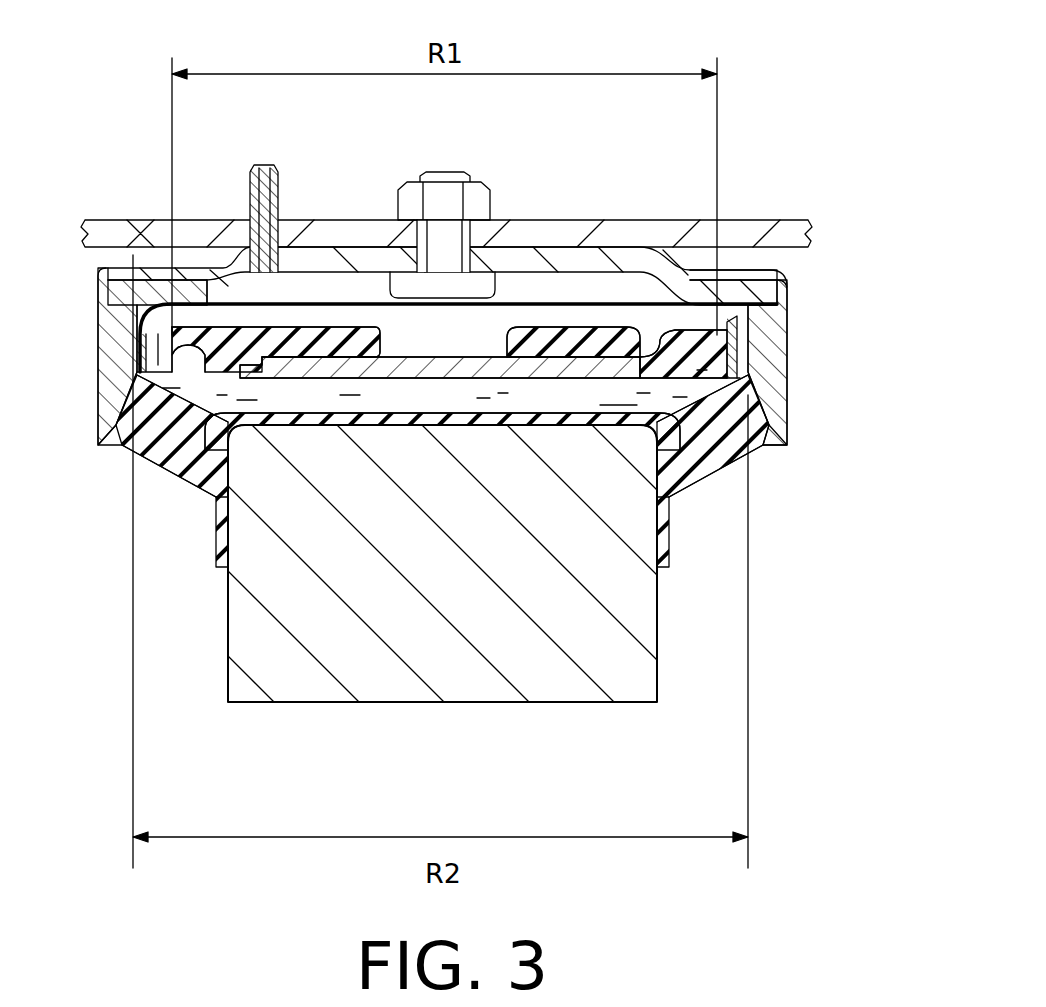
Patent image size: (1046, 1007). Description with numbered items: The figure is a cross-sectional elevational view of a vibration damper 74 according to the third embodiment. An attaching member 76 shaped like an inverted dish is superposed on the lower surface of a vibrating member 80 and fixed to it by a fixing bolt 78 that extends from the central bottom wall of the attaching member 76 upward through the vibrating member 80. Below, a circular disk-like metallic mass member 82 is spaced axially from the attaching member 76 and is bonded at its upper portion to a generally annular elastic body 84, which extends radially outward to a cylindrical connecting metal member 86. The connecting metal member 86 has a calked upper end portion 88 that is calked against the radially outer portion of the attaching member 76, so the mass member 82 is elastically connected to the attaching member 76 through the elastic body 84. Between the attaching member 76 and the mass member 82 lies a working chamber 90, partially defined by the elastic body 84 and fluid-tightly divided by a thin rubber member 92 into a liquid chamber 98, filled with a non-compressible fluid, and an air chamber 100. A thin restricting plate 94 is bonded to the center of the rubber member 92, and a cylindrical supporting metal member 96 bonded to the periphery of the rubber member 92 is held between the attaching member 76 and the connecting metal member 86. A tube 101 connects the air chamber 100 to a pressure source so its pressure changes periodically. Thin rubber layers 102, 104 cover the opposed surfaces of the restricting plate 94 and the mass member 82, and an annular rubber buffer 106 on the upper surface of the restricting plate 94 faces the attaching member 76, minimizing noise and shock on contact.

The vibration damper 74 is at (473, 411).
The attaching member 76 is at (562, 258).
The fixing bolt 78 is at (443, 232).
The vibrating member 80 is at (116, 216).
The mass member 82 is at (550, 680).
The elastic body 84 is at (697, 447).
The connecting metal member 86 is at (106, 346).
The calked upper end portion 88 is at (750, 250).
The working chamber 90 is at (503, 218).
The rubber member 92 is at (207, 363).
The restricting plate 94 is at (403, 362).
The supporting metal member 96 is at (735, 362).
The liquid chamber 98 is at (688, 330).
The air chamber 100 is at (630, 275).
The tube 101 is at (248, 200).
The rubber layer 102 is at (228, 517).
The rubber layer 104 is at (410, 420).
The rubber buffer 106 is at (322, 345).